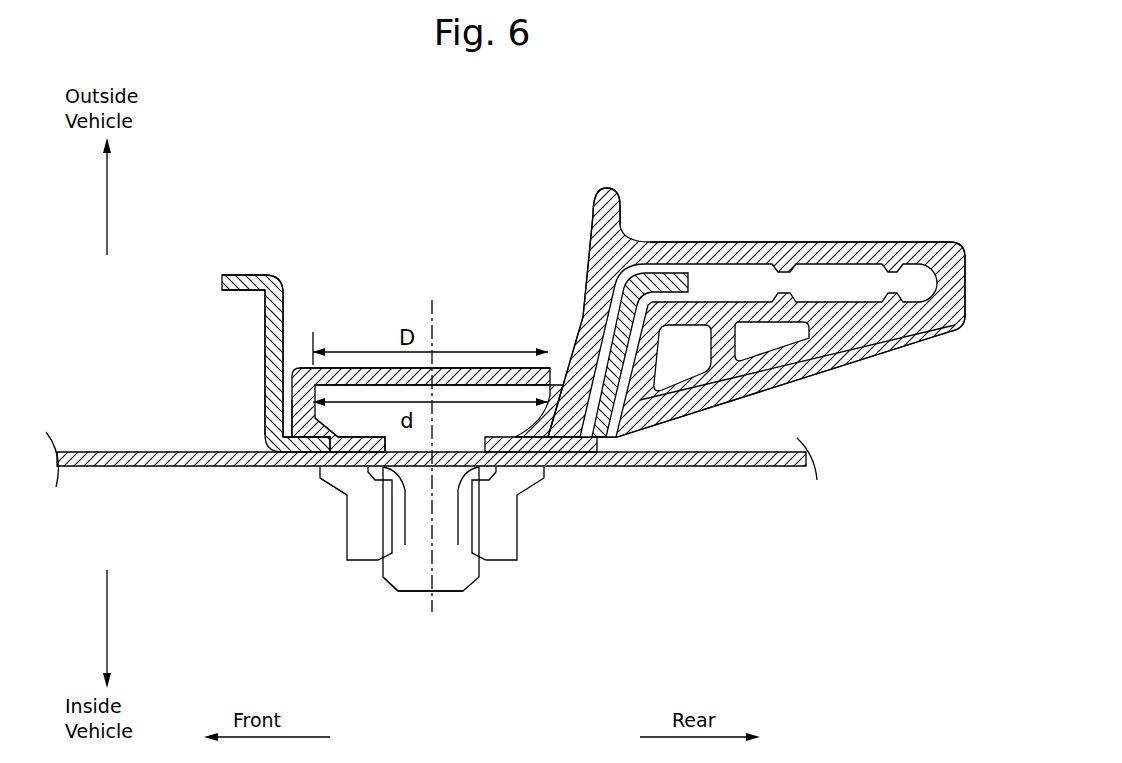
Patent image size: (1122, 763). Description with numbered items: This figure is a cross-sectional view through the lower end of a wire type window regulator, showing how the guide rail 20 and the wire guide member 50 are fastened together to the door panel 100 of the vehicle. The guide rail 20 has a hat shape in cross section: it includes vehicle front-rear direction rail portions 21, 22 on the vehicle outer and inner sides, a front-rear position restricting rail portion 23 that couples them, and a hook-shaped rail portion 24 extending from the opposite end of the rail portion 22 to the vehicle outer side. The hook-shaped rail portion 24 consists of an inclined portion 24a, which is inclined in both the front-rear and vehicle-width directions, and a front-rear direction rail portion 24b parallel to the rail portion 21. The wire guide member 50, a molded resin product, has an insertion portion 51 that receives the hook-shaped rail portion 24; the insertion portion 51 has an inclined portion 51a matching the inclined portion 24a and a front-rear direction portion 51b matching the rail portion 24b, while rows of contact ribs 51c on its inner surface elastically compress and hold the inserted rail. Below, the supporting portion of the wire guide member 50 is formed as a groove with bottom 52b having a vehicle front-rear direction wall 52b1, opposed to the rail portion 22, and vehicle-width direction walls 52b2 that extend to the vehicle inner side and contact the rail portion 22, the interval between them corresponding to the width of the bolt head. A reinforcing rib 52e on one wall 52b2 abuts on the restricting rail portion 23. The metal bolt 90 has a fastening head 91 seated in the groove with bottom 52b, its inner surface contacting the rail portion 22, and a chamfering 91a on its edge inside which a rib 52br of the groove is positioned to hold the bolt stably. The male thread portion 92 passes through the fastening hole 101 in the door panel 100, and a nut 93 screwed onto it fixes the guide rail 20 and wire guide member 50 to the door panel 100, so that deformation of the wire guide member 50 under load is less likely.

The guide rail 20 is at (212, 326).
The vehicle front-rear direction rail portion 21 is at (246, 283).
The vehicle front-rear direction rail portion 22 is at (358, 450).
The front-rear position restricting rail portion 23 is at (277, 322).
The hook-shaped rail portion 24 is at (870, 370).
The inclined portion 24a is at (625, 345).
The front-rear direction rail portion 24b is at (655, 345).
The wire guide member 50 is at (843, 185).
The insertion portion 51 is at (750, 277).
The inclined portion 51a is at (590, 318).
The front-rear direction portion 51b is at (700, 250).
The contact ribs 51c is at (657, 276).
The groove with bottom 52b is at (392, 384).
The vehicle front-rear direction wall 52b1 is at (458, 378).
The vehicle-width direction walls 52b2 is at (300, 412).
The rib 52br is at (332, 440).
The reinforcing rib 52e is at (293, 408).
The metal bolt 90 is at (440, 450).
The fastening head 91 is at (375, 418).
The chamfering 91a is at (275, 447).
The male thread portion 92 is at (437, 598).
The nut 93 is at (510, 546).
The door panel 100 is at (100, 450).
The fastening hole 101 is at (404, 594).